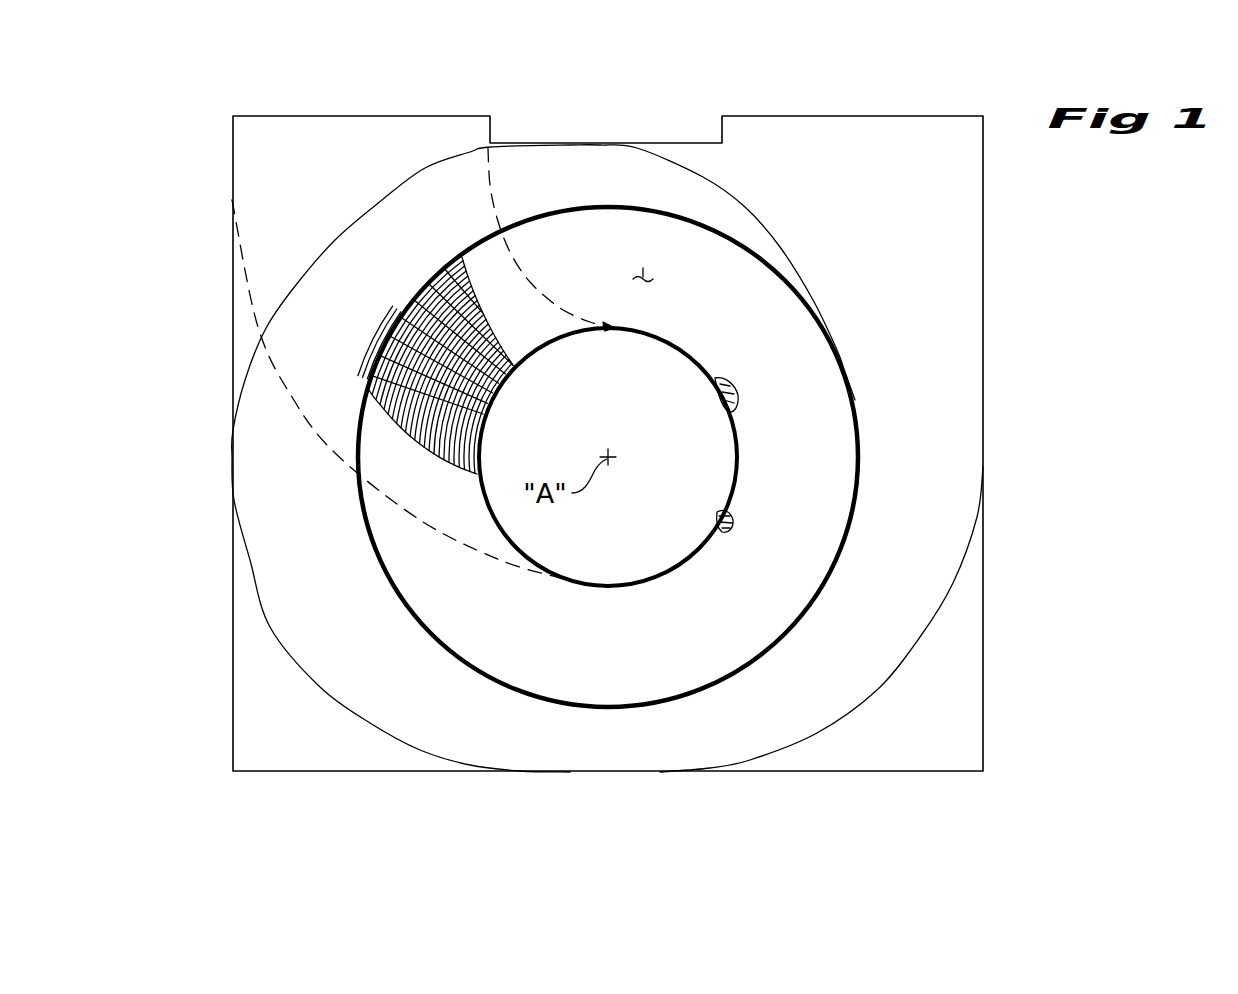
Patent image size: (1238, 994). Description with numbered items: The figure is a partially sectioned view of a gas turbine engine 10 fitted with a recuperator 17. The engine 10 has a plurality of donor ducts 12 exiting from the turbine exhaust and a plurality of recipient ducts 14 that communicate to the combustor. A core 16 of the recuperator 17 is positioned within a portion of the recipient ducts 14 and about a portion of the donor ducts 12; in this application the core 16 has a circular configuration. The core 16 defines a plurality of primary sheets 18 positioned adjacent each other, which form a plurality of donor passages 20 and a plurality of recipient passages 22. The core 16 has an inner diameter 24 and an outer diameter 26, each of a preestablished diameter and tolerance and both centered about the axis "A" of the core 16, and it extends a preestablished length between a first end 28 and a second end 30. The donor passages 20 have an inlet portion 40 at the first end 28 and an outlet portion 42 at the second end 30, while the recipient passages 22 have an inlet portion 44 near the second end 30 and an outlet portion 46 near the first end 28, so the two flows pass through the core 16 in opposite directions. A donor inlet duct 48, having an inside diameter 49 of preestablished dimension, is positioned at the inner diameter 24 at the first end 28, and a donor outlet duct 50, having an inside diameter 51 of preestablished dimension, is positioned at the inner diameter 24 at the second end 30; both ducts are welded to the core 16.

The engine 10 is at (970, 814).
The donor ducts 12 is at (318, 178).
The recipient ducts 14 is at (763, 333).
The core 16 is at (373, 543).
The recuperator 17 is at (333, 817).
The primary sheets 18 is at (455, 405).
The donor passages 20 is at (440, 412).
The recipient passages 22 is at (445, 390).
The inner diameter 24 is at (566, 580).
The outer diameter 26 is at (368, 512).
The first end 28 is at (583, 640).
The second end 30 is at (642, 268).
The inlet portion 40 is at (422, 290).
The outlet portion 42 is at (500, 410).
The inlet portion 44 is at (500, 445).
The outlet portion 46 is at (403, 318).
The donor inlet duct 48 is at (633, 586).
The inside diameter 49 is at (736, 432).
The donor outlet duct 50 is at (734, 378).
The inside diameter 51 is at (731, 417).